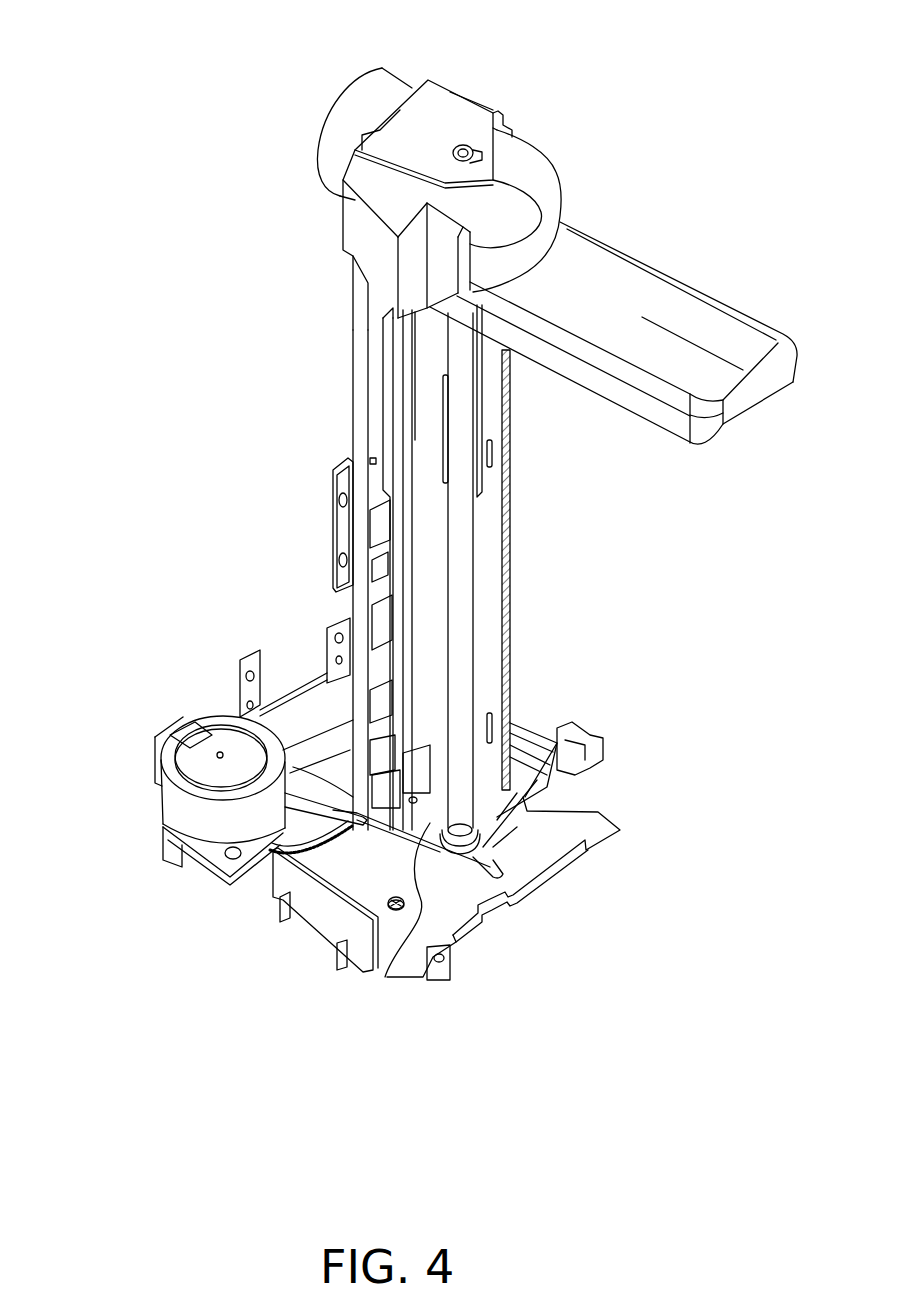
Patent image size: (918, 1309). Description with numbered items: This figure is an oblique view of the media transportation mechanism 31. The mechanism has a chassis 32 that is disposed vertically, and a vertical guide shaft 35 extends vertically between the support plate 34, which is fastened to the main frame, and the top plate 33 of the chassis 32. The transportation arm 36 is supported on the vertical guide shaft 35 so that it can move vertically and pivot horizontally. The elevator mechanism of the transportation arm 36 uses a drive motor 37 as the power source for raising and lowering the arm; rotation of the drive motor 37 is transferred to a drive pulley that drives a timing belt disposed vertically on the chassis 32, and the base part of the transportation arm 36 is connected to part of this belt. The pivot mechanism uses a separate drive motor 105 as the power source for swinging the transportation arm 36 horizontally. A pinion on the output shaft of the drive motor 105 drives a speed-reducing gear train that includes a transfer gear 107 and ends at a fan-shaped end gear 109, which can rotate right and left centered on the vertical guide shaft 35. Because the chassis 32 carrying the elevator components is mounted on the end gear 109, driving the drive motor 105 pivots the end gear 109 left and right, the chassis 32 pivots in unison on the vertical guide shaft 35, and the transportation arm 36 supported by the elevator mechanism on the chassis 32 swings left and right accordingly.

The media transportation mechanism 31 is at (646, 217).
The chassis 32 is at (348, 394).
The top plate 33 is at (465, 117).
The support plate 34 is at (380, 965).
The vertical guide shaft 35 is at (470, 585).
The transportation arm 36 is at (690, 298).
The drive motor 37 is at (333, 136).
The drive motor 105 is at (177, 805).
The transfer gear 107 is at (318, 808).
The fan-shaped end gear 109 is at (345, 830).